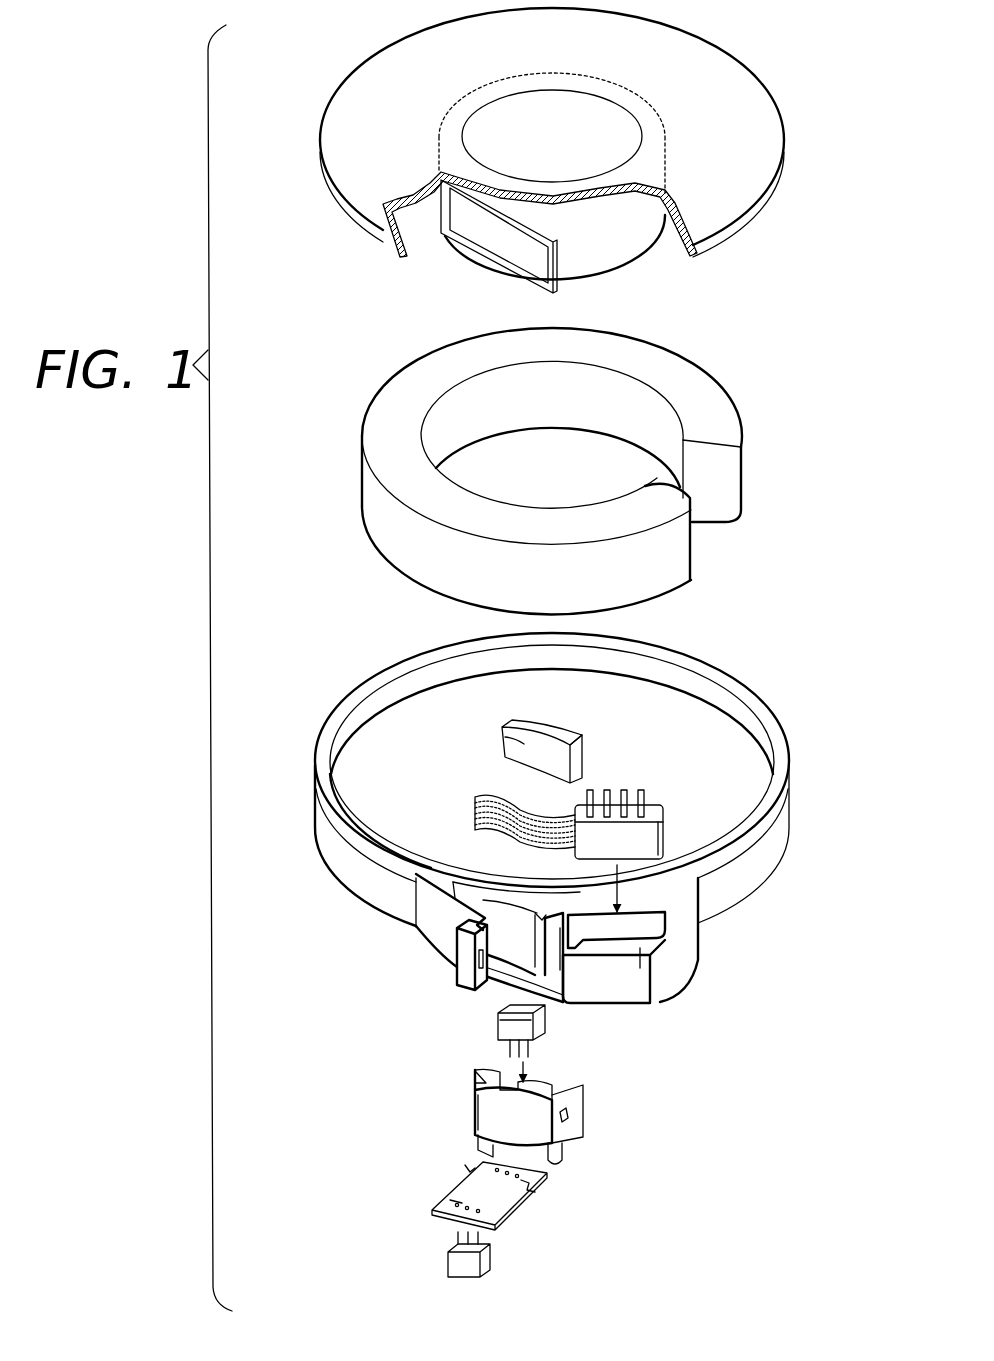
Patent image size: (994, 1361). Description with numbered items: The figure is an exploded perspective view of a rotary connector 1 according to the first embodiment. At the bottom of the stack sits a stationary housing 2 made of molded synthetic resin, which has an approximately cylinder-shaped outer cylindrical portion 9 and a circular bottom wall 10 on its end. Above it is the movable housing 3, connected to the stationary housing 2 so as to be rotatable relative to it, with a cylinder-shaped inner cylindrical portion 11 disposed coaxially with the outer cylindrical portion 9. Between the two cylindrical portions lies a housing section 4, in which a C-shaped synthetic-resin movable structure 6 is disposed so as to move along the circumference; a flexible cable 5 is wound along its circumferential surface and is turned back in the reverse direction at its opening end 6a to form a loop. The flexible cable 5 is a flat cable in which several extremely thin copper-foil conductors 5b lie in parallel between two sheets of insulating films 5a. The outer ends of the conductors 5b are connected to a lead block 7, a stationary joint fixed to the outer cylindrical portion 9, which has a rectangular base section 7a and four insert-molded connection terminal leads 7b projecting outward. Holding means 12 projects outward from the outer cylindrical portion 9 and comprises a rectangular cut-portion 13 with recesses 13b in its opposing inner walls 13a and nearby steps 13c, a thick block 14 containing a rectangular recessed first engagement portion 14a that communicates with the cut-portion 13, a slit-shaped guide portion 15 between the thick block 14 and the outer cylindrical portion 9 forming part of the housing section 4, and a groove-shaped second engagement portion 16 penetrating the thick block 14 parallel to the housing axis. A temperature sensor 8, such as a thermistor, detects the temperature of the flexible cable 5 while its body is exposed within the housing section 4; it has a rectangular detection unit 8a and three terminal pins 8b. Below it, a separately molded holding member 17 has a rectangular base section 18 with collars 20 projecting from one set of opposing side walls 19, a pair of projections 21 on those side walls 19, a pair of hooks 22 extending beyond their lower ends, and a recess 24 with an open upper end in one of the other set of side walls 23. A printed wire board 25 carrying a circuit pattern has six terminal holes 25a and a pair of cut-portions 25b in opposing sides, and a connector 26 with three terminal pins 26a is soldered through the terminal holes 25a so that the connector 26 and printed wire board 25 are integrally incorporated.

The rotary connector 1 is at (296, 263).
The stationary housing 2 is at (812, 732).
The movable housing 3 is at (745, 55).
The housing section 4 is at (707, 748).
The flexible cable 5 is at (530, 232).
The insulating films 5a is at (478, 238).
The conductors 5b is at (475, 795).
The movable structure 6 is at (697, 380).
The opening end 6a is at (700, 535).
The lead block 7 is at (667, 826).
The base section 7a is at (633, 835).
The connection terminal leads 7b is at (640, 802).
The temperature sensor 8 is at (548, 1027).
The detection unit 8a is at (508, 1028).
The terminal pins 8b is at (505, 1050).
The outer cylindrical portion 9 is at (355, 690).
The bottom wall 10 is at (515, 975).
The inner cylindrical portion 11 is at (635, 240).
The holding means 12 is at (752, 118).
The cut-portion 13 is at (548, 1002).
The inner walls 13a is at (445, 950).
The recesses 13b is at (470, 958).
The steps 13c is at (500, 905).
The thick block 14 is at (643, 883).
The first engagement portion 14a is at (632, 945).
The guide portion 15 is at (470, 900).
The second engagement portion 16 is at (540, 915).
The holding member 17 is at (473, 1105).
The base section 18 is at (475, 1112).
The side walls 19 is at (575, 1130).
The collars 20 is at (580, 1103).
The projections 21 is at (565, 1122).
The hooks 22 is at (550, 1160).
The side walls 23 is at (505, 1118).
The recess 24 is at (490, 1080).
The printed wire board 25 is at (517, 1218).
The terminal holes 25a is at (455, 1207).
The cut-portions 25b is at (530, 1188).
The connector 26 is at (485, 1262).
The terminal pins 26a is at (455, 1237).